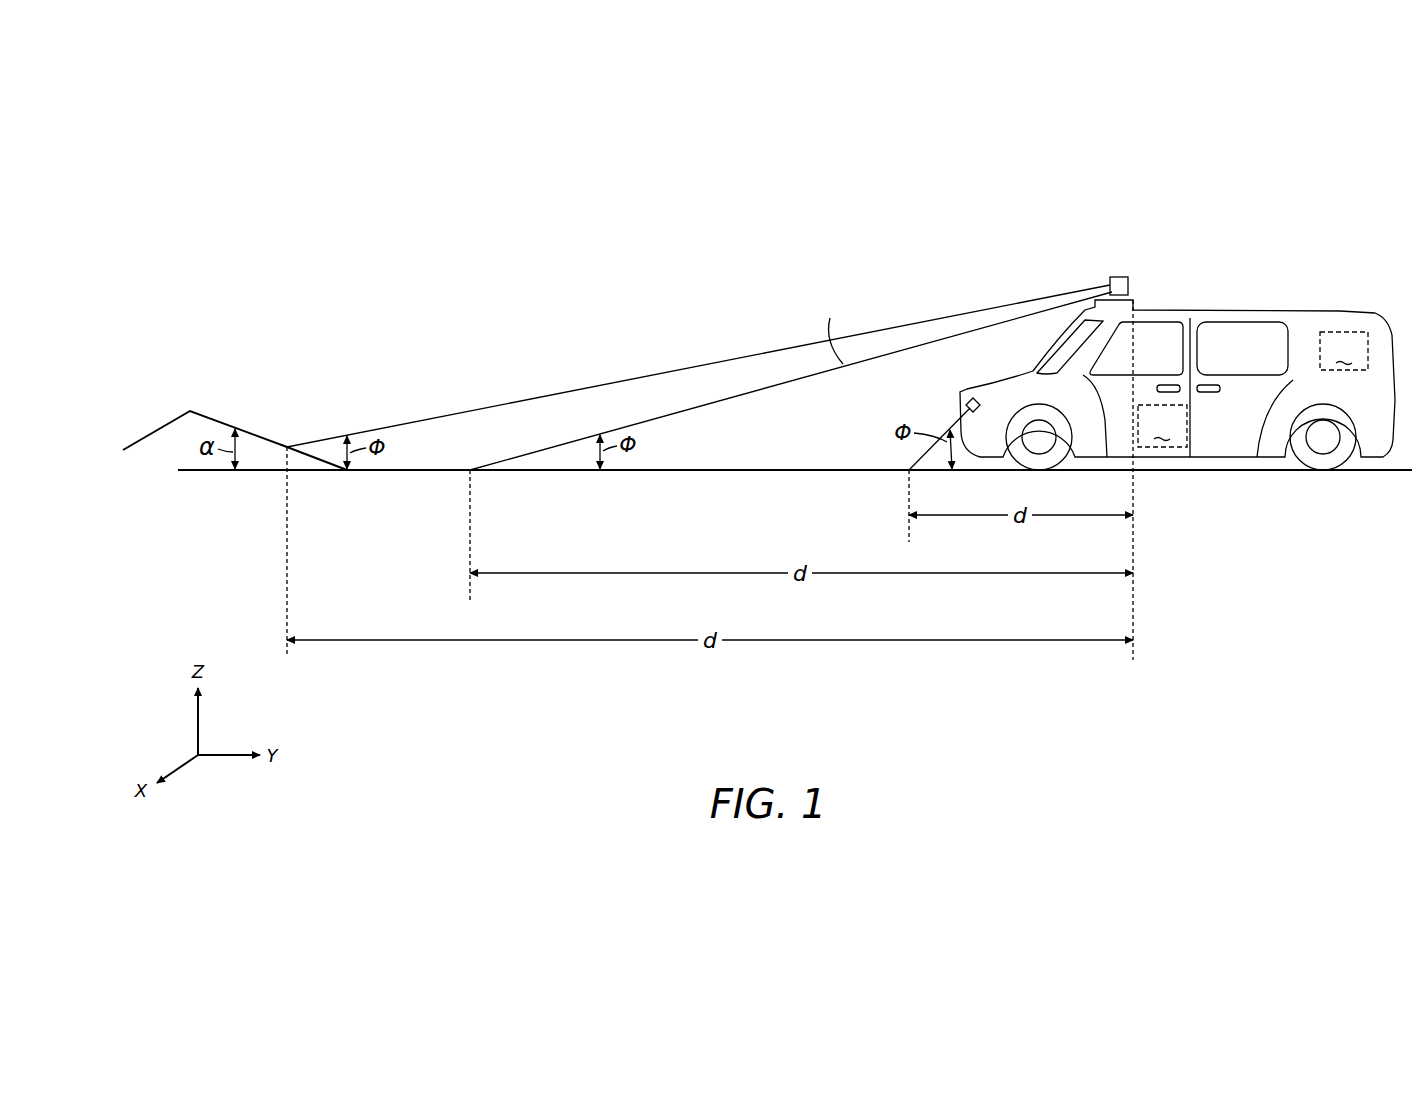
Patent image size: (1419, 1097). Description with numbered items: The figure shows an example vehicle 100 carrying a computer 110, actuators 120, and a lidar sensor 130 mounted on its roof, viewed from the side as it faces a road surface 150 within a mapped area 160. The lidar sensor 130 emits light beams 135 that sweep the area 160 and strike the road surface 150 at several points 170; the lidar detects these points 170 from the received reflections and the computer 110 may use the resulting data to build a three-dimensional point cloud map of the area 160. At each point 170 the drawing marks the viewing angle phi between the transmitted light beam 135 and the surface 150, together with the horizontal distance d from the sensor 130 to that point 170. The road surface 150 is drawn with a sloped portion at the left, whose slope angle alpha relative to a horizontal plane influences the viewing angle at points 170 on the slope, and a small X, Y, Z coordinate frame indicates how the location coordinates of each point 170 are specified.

The vehicle 100 is at (1340, 309).
The computer 110 is at (1344, 351).
The actuator 120 is at (1162, 426).
The lidar sensor 130 is at (1120, 276).
The light beam 135 is at (867, 332).
The road surface 150 is at (760, 471).
The area 160 is at (502, 240).
The point 170 is at (286, 441).